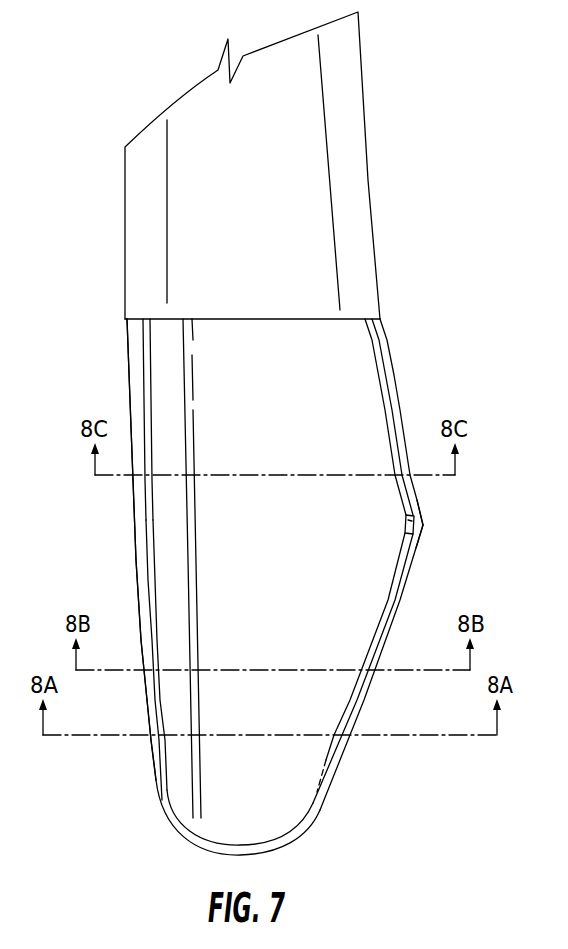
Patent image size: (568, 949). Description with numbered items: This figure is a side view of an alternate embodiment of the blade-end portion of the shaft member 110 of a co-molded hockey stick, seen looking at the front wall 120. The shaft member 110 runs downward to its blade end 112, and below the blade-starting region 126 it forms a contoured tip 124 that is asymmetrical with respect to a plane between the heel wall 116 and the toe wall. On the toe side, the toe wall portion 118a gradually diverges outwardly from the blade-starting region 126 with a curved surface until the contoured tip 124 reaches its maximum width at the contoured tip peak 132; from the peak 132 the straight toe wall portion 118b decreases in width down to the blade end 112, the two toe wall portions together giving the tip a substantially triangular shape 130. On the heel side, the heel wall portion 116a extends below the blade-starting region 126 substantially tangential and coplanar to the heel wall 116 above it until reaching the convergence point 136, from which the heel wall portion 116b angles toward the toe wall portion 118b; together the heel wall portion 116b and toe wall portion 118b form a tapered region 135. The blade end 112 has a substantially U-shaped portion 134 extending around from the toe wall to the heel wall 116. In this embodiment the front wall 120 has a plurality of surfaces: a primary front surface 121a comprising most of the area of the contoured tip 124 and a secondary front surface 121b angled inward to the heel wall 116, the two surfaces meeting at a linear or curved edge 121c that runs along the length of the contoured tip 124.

The shaft member 110 is at (115, 105).
The blade end 112 is at (187, 845).
The heel wall 116 is at (128, 353).
The heel wall portion 116a is at (127, 390).
The heel wall portion 116b is at (140, 613).
The toe wall portion 118a is at (393, 415).
The toe wall portion 118b is at (338, 752).
The front wall 120 is at (248, 372).
The primary front surface 121a is at (333, 377).
The secondary front surface 121b is at (167, 380).
The edge 121c is at (192, 575).
The contoured tip 124 is at (342, 633).
The blade-starting region 126 is at (238, 318).
The substantially triangular shape 130 is at (382, 508).
The contoured tip peak 132 is at (422, 527).
The substantially U-shaped portion 134 is at (323, 809).
The tapered region 135 is at (150, 758).
The convergence point 136 is at (133, 522).